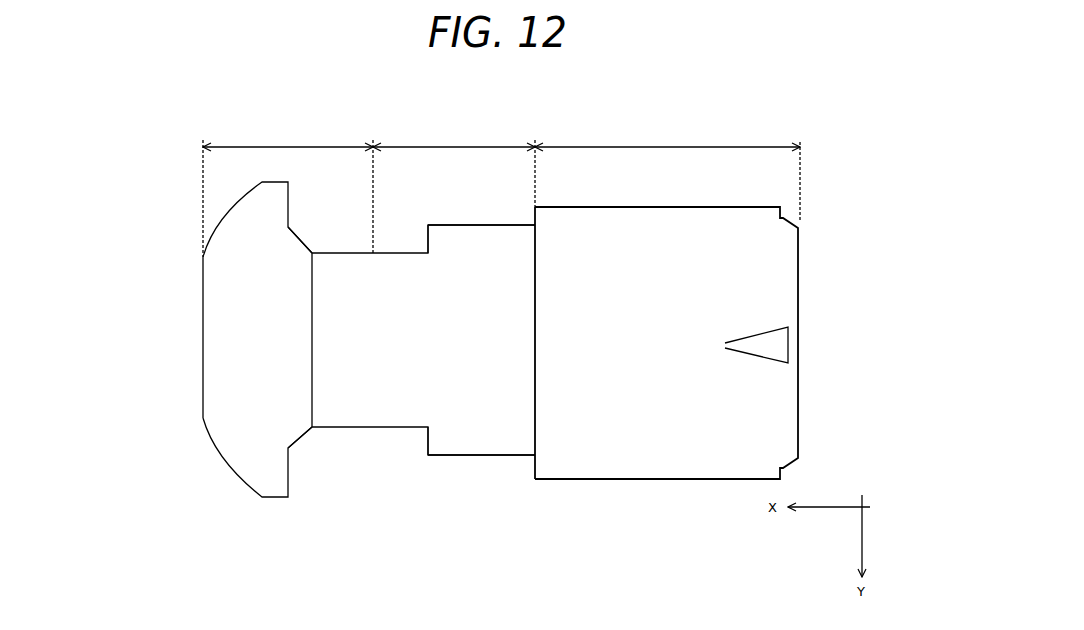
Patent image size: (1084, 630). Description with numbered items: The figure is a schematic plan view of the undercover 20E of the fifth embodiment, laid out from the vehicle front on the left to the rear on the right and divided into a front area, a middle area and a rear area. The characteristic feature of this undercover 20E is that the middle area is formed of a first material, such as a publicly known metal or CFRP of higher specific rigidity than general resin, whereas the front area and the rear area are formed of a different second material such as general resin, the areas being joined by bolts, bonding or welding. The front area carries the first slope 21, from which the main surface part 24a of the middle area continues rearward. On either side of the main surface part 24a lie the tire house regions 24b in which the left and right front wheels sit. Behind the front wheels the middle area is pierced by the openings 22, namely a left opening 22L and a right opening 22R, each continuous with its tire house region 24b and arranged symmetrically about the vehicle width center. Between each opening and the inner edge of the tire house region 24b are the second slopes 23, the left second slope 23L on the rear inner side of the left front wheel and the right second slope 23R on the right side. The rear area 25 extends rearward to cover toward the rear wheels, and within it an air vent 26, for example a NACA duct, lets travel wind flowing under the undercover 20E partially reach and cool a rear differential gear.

The undercover 20E is at (172, 90).
The first slope 21 is at (255, 353).
The main surface part 24a is at (362, 360).
The tire house region 24b is at (327, 334).
The second slope 23 is at (422, 306).
The left second slope 23L is at (467, 243).
The right second slope 23R is at (462, 442).
The openings 22 is at (489, 319).
The left opening 22L is at (480, 213).
The right opening 22R is at (477, 470).
The lens barrel 25 is at (657, 447).
The protrusion 26 is at (757, 332).